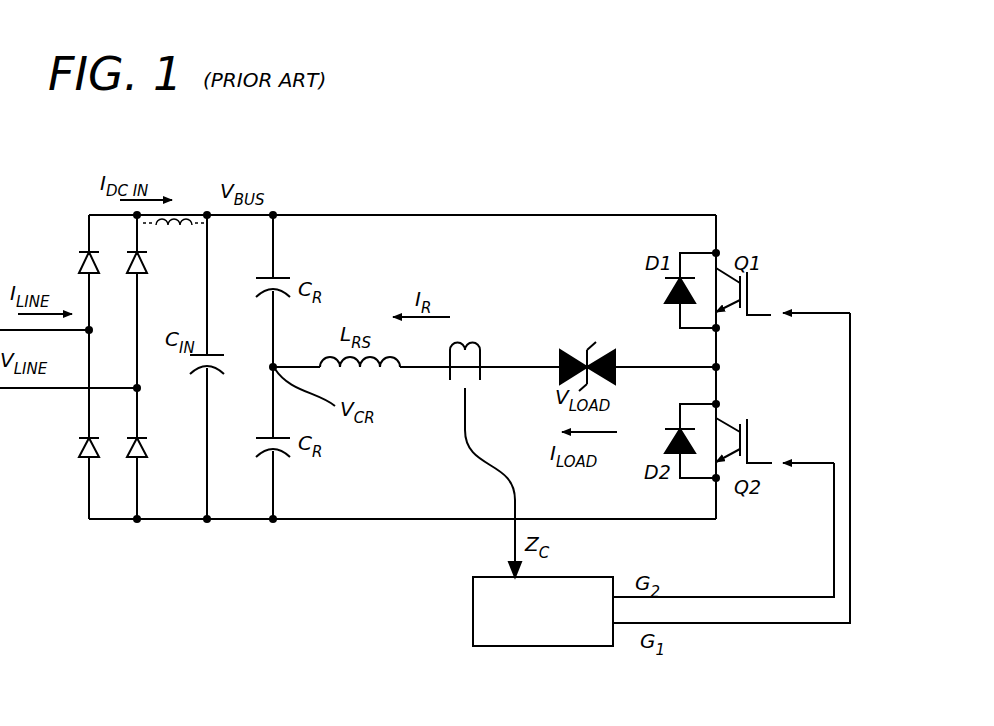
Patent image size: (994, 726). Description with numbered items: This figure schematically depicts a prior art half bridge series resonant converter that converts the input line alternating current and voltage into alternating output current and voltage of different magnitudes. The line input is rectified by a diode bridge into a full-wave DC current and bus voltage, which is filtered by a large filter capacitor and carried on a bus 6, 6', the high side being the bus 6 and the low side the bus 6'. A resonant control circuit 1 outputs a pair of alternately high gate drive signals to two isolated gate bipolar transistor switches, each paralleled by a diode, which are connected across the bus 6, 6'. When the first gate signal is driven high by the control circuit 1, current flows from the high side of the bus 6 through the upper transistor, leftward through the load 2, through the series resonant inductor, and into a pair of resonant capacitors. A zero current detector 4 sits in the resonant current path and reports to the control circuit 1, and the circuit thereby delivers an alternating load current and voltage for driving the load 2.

The resonant control circuit 1 is at (473, 600).
The load 2 is at (584, 350).
The zero current detector 4 is at (470, 344).
The bus (high side) 6 is at (402, 171).
The bus (low side) 6' is at (402, 561).